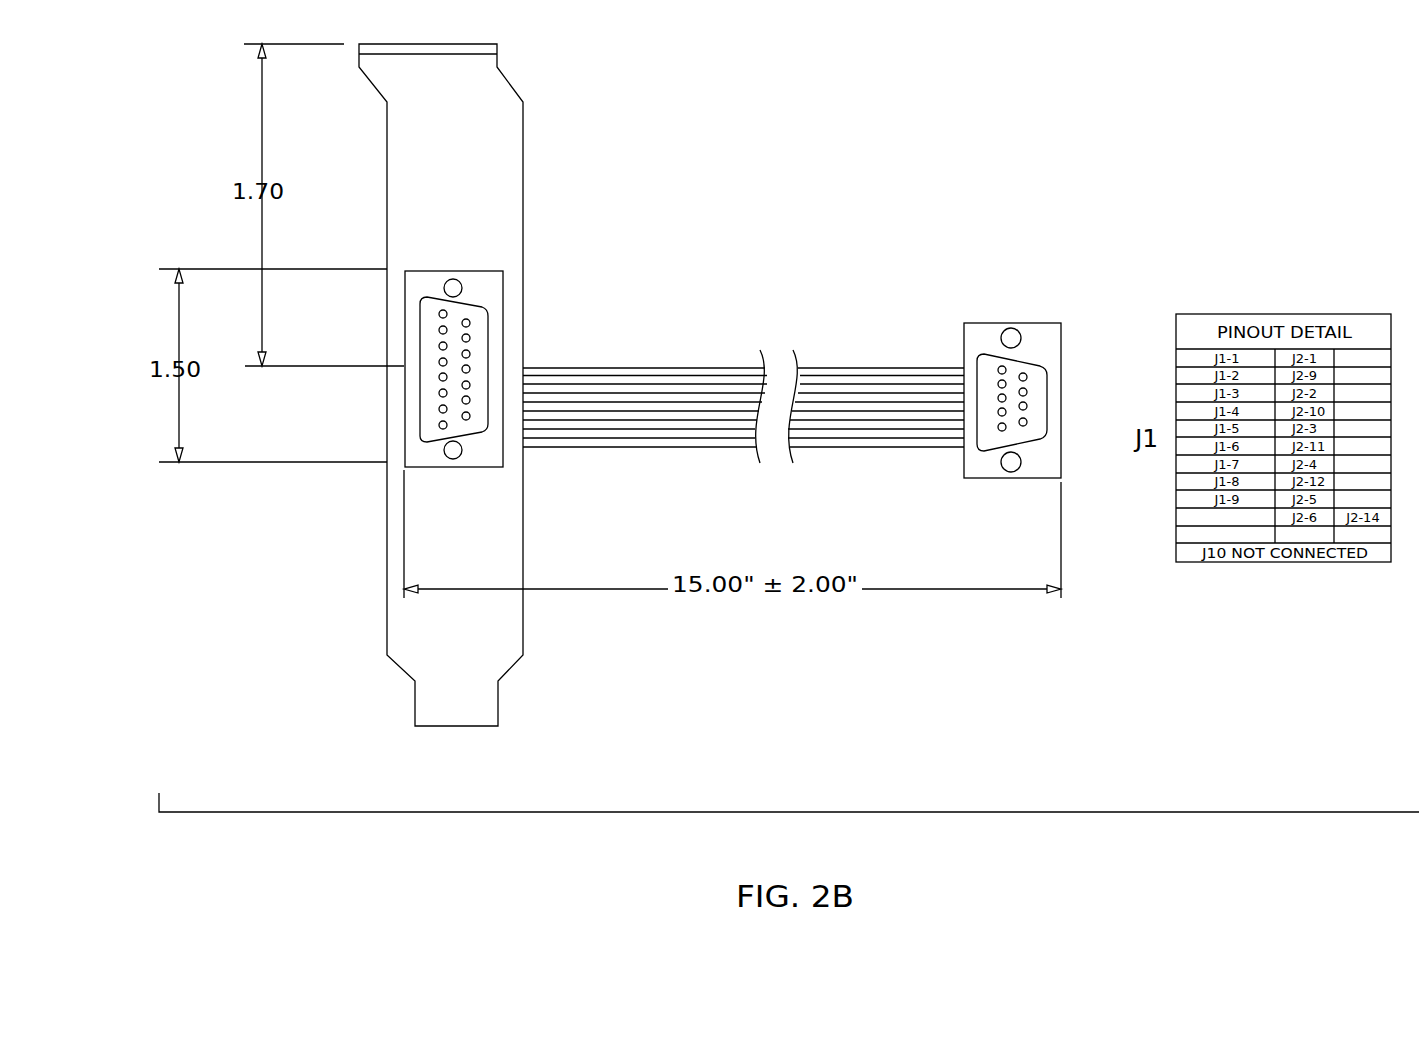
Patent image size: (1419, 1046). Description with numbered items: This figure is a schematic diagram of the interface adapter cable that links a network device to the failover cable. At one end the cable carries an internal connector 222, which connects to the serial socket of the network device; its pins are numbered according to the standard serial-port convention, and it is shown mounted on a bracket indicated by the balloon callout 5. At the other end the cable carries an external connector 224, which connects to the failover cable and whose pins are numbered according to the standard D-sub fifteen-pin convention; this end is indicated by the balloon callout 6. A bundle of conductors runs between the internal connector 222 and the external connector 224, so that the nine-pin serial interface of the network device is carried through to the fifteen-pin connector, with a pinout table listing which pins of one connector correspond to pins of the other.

The mounting bracket with J2 connector 5 is at (502, 271).
The cable with J1 connector 6 is at (963, 323).
The internal connector 222 is at (453, 272).
The external connector 224 is at (1011, 322).